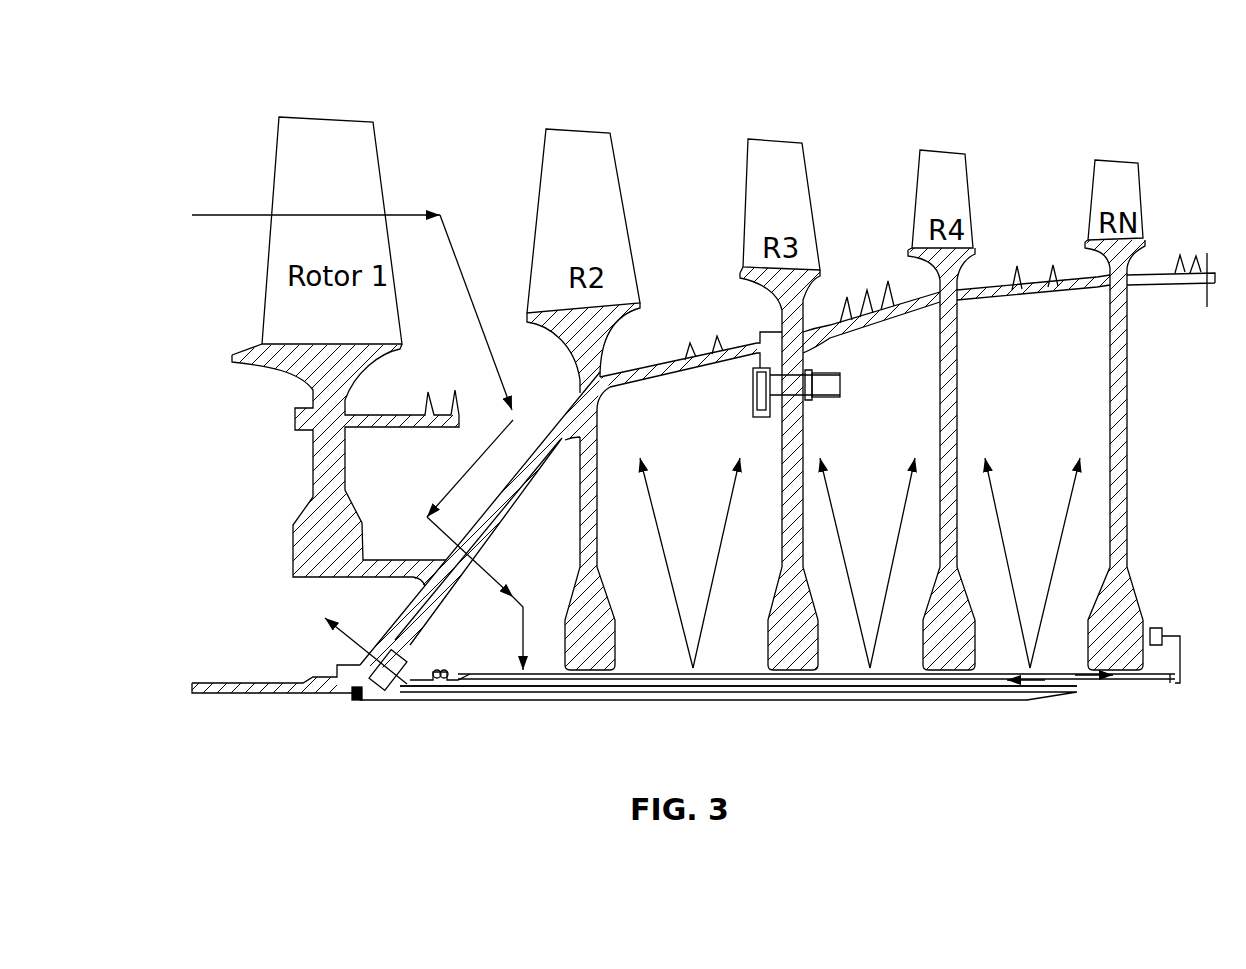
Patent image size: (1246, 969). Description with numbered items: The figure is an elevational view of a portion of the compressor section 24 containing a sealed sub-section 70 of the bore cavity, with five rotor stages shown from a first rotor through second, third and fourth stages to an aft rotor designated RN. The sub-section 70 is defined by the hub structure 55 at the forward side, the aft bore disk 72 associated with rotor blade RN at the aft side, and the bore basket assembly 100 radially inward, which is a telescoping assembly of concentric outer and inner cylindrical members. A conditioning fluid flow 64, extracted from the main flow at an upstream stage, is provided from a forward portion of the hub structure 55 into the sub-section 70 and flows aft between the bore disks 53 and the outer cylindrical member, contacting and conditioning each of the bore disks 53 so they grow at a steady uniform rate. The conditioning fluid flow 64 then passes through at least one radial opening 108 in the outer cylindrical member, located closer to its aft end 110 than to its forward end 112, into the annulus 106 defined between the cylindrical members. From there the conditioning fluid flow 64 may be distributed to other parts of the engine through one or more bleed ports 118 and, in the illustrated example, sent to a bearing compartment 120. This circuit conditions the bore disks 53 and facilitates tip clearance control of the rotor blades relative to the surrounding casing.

The compressor section 24 is at (237, 57).
The bore disks 53 is at (590, 527).
The hub structure 55 is at (558, 437).
The conditioning fluid flow 64 is at (448, 480).
The sub-section of the bore cavity 70 is at (863, 368).
The aft bore disk 72 is at (1128, 380).
The bore basket assembly 100 is at (530, 722).
The annulus 106 is at (895, 697).
The radial opening 108 is at (1023, 673).
The aft end of the outer cylindrical member 110 is at (1128, 683).
The forward end of the outer cylindrical member 112 is at (446, 670).
The bleed port 118 is at (363, 650).
The bearing compartment 120 is at (250, 655).